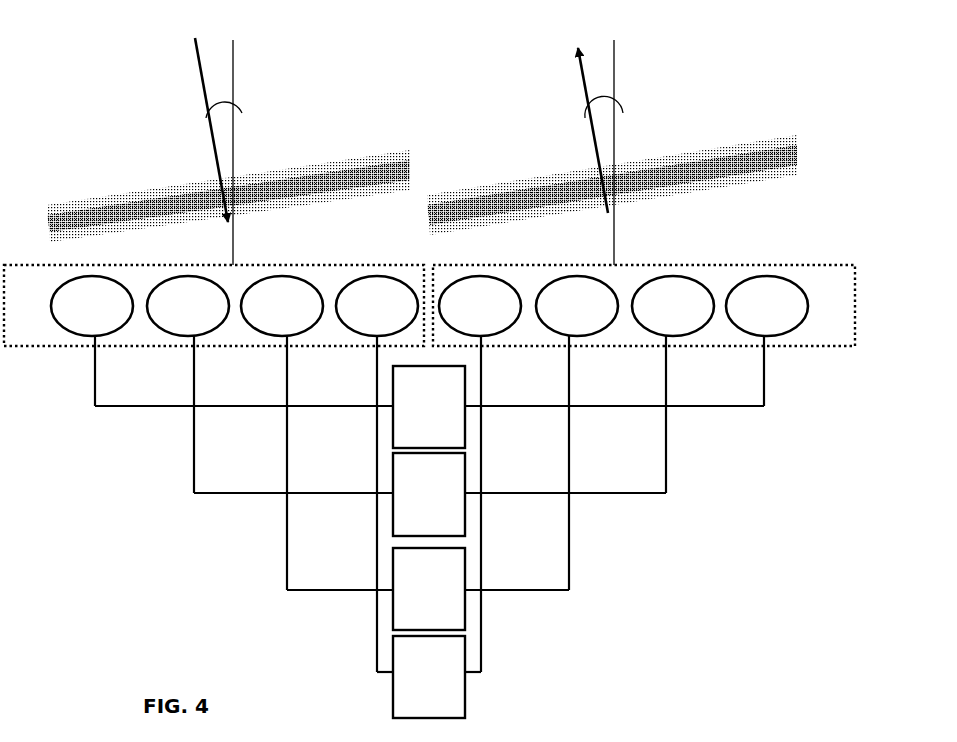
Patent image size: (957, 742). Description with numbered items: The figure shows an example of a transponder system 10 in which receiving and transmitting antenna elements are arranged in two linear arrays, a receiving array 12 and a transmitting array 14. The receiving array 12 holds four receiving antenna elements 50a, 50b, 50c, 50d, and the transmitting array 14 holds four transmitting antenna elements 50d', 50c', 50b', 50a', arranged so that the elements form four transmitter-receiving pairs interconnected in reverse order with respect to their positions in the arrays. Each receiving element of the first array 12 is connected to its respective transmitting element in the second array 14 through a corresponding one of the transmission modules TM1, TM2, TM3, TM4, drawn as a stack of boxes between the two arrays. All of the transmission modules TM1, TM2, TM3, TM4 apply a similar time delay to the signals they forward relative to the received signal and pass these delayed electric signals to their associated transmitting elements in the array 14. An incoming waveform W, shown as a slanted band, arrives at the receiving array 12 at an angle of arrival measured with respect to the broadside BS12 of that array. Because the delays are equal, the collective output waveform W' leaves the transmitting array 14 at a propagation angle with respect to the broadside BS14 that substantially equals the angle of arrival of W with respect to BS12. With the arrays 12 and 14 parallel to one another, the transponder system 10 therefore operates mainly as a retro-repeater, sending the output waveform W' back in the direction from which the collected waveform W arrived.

The transponder system 10 is at (133, 489).
The first linear array 12 is at (214, 305).
The second linear array 14 is at (644, 305).
The receiving antenna element 50a is at (92, 306).
The receiving antenna element 50b is at (188, 306).
The receiving antenna element 50c is at (282, 306).
The receiving antenna element 50d is at (377, 306).
The transmitting antenna element 50a' is at (767, 306).
The transmitting antenna element 50b' is at (673, 306).
The transmitting antenna element 50c' is at (577, 306).
The transmitting antenna element 50d' is at (480, 306).
The broadside of the receiving array BS12 is at (230, 148).
The broadside of the transmitting array BS14 is at (611, 148).
The incoming waveform W is at (228, 196).
The output waveform W' is at (612, 185).
The transmission module TM1 is at (429, 407).
The transmission module TM2 is at (429, 494).
The transmission module TM3 is at (429, 589).
The transmission module TM4 is at (429, 677).